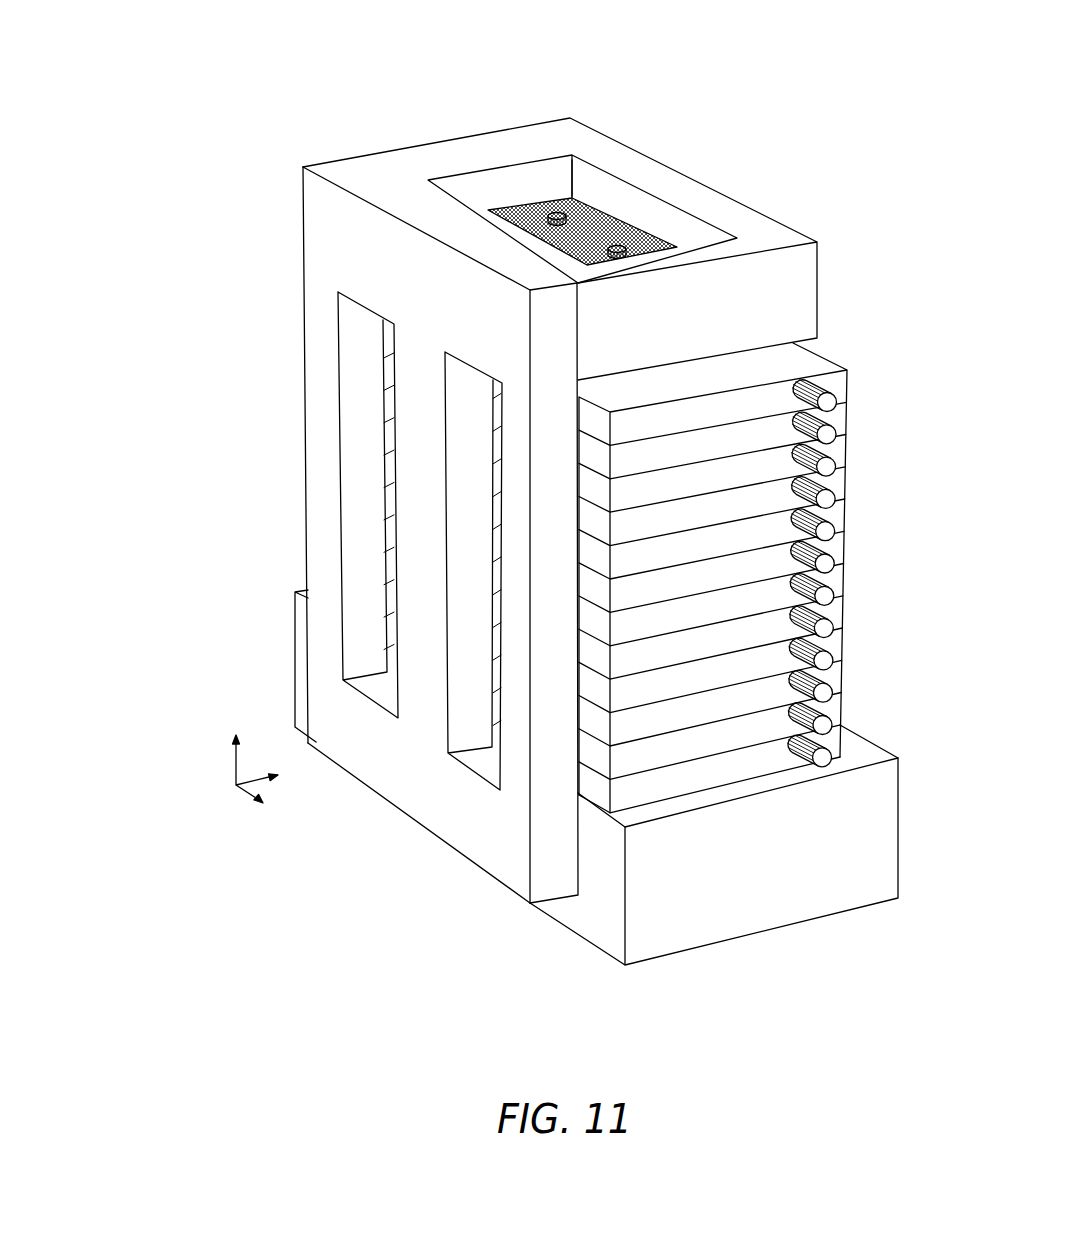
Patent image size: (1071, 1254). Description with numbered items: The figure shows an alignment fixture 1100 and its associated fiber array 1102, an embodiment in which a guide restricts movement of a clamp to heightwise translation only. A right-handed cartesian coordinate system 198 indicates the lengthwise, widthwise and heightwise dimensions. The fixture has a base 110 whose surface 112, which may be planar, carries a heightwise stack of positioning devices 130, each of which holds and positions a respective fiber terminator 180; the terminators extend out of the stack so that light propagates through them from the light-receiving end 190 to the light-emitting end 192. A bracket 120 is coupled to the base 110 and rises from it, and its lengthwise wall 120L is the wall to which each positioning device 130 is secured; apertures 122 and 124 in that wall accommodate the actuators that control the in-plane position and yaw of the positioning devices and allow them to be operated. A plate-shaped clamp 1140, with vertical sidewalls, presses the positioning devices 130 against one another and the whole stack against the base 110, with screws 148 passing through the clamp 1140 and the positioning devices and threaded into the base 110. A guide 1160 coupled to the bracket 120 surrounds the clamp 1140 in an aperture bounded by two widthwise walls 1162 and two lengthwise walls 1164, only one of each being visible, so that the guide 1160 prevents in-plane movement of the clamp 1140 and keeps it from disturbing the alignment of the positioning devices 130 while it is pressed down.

The fixture 1100 is at (490, 527).
The fiber array 1102 is at (490, 527).
The base 110 is at (623, 777).
The surface 112 is at (845, 742).
The bracket 120 is at (554, 496).
The lengthwise wall 120L is at (392, 805).
The aperture 122 is at (371, 628).
The aperture 124 is at (472, 710).
The positioning device 130 is at (759, 671).
The screw 148 is at (558, 213).
The fiber terminator 180 is at (846, 524).
The light-receiving end 190 is at (296, 523).
The light-emitting end 192 is at (723, 747).
The cartesian coordinate system 198 is at (215, 778).
The clamp 1140 is at (610, 186).
The guide 1160 is at (602, 234).
The widthwise wall 1162 is at (515, 186).
The lengthwise wall 1164 is at (685, 232).